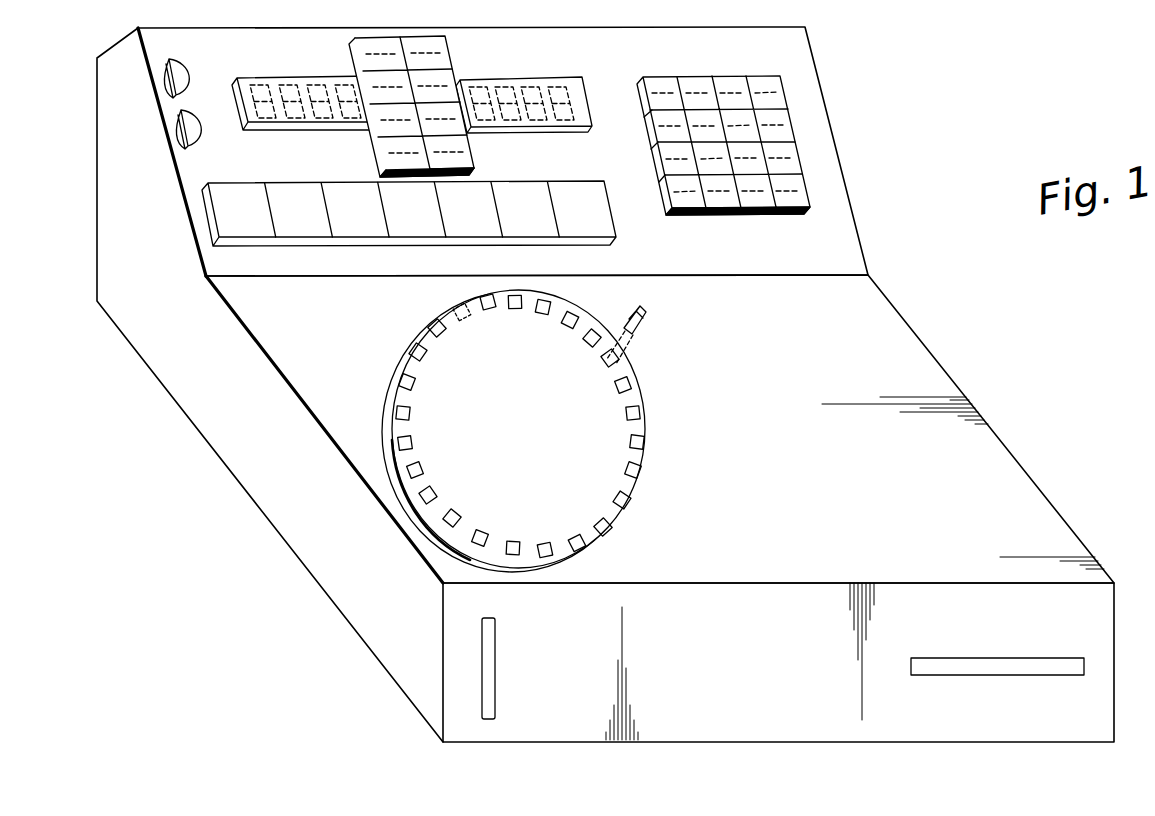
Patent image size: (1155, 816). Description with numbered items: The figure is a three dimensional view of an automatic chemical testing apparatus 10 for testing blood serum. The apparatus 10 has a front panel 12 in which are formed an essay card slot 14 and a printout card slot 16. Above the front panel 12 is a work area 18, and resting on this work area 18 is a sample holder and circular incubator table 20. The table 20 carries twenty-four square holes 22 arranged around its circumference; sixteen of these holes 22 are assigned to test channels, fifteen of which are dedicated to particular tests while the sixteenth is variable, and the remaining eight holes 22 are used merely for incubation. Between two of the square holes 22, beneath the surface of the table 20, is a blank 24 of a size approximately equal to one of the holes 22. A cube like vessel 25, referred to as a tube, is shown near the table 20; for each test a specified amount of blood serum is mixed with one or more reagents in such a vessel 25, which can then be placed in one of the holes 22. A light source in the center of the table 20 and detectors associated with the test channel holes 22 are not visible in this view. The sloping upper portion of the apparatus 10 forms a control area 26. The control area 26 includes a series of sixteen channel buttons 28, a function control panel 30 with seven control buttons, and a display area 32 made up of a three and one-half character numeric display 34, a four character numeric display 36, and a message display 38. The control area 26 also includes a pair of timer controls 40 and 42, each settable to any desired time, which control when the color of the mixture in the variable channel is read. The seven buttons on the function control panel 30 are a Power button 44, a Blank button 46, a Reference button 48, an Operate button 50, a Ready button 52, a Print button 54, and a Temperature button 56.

The automatic chemical testing apparatus 10 is at (605, 384).
The front panel 12 is at (739, 661).
The essay card slot 14 is at (495, 654).
The printout card slot 16 is at (985, 657).
The work area 18 is at (777, 463).
The sample holder and circular incubator table 20 is at (640, 382).
The square holes 22 is at (627, 471).
The blank 24 is at (466, 322).
The cube like vessel 25 is at (648, 325).
The control area 26 is at (622, 61).
The channel buttons 28 is at (722, 78).
The function control panel 30 is at (620, 242).
The display area 32 is at (452, 56).
The three and one-half character numeric display 34 is at (518, 76).
The four character numeric display 36 is at (284, 77).
The message display 38 is at (476, 154).
The timer control 40 is at (196, 76).
The timer control 42 is at (203, 116).
The Power button 44 is at (250, 232).
The Blank button 46 is at (306, 232).
The Reference button 48 is at (363, 232).
The Operate button 50 is at (420, 232).
The Ready button 52 is at (478, 232).
The Print button 54 is at (536, 232).
The Temperature button 56 is at (590, 232).